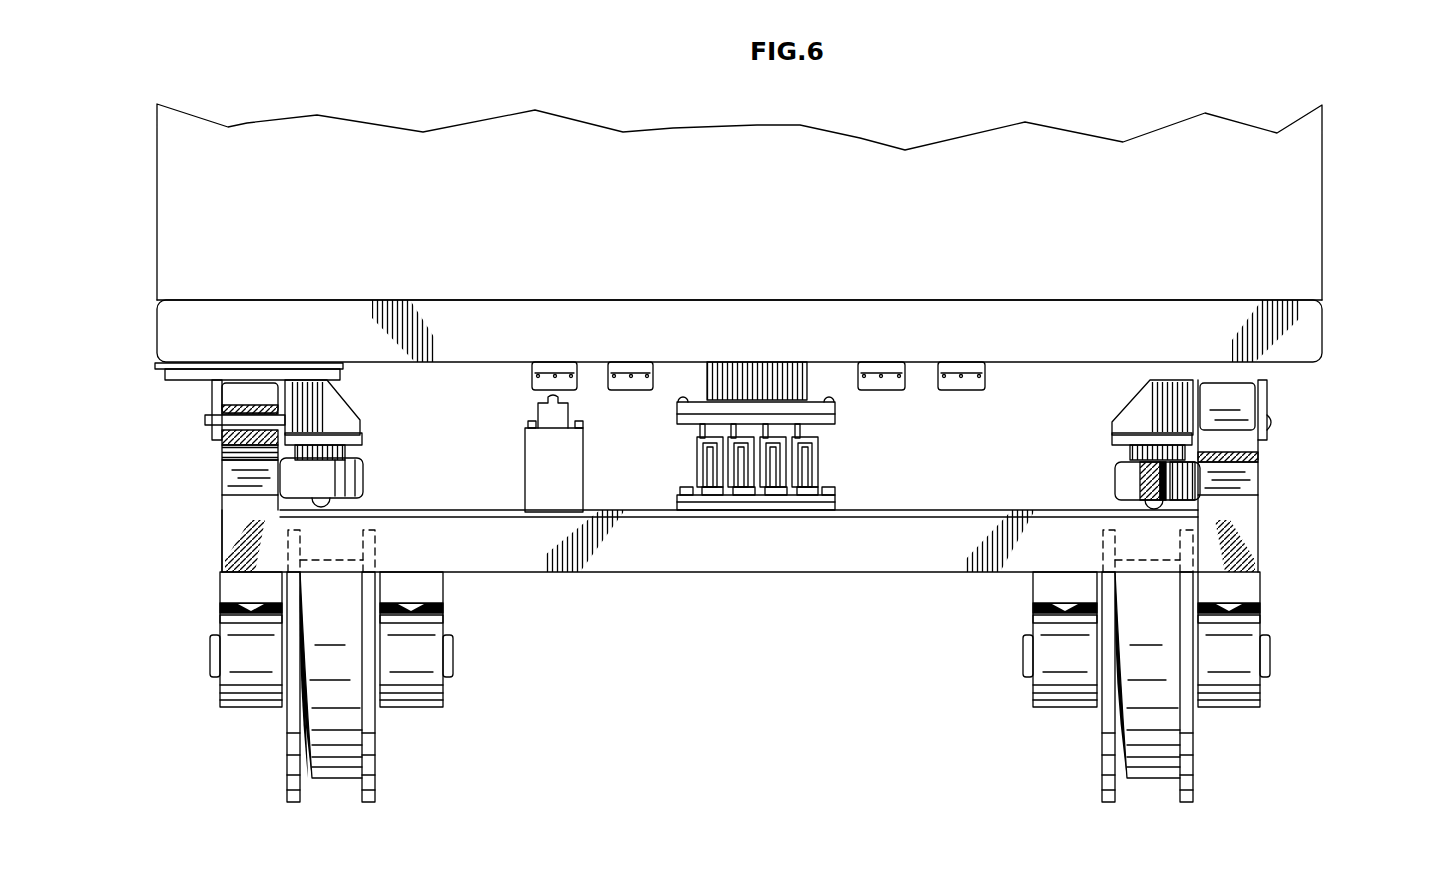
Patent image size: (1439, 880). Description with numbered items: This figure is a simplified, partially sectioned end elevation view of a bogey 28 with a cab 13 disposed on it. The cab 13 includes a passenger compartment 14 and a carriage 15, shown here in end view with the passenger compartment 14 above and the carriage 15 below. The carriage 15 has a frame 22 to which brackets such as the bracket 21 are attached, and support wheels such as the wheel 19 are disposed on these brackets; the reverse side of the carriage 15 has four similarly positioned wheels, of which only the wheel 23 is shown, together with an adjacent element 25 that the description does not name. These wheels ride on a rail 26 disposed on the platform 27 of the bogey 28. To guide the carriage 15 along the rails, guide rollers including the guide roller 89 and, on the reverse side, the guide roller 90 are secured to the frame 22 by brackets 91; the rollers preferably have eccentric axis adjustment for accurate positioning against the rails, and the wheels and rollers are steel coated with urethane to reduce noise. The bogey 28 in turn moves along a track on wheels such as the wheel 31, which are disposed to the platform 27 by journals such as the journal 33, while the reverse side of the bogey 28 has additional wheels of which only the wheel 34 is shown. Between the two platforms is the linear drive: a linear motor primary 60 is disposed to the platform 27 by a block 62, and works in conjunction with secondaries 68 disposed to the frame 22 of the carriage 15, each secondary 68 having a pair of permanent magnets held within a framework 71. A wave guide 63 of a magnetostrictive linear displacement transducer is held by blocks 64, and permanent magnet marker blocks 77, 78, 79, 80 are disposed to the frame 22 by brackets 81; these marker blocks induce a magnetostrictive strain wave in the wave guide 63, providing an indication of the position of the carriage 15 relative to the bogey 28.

The cab 13 is at (450, 130).
The passenger compartment 14 is at (771, 195).
The carriage 15 is at (794, 297).
The frame 22 is at (1033, 350).
The bracket 21 is at (198, 375).
The wheel 19 is at (243, 437).
The rail 26 is at (250, 480).
The bracket 91 is at (330, 398).
The guide roller 89 is at (365, 480).
The guide roller 90 is at (1118, 487).
The wheel 23 is at (1238, 440).
The bushing 25 is at (1250, 492).
The permanent magnet marker block 80 is at (532, 382).
The permanent magnet marker block 77 is at (612, 387).
The bracket 81 is at (632, 365).
The permanent magnet marker block 79 is at (893, 386).
The permanent magnet marker block 78 is at (975, 386).
The block 64 is at (568, 479).
The wave guide 63 is at (546, 400).
The linear motor primary 60 is at (777, 437).
The framework 71 is at (812, 430).
The secondary 68 is at (818, 472).
The block 62 is at (838, 506).
The platform 27 is at (710, 541).
The bogey 28 is at (710, 583).
The wheel 31 is at (343, 625).
The journal 33 is at (260, 667).
The wheel 34 is at (1158, 627).